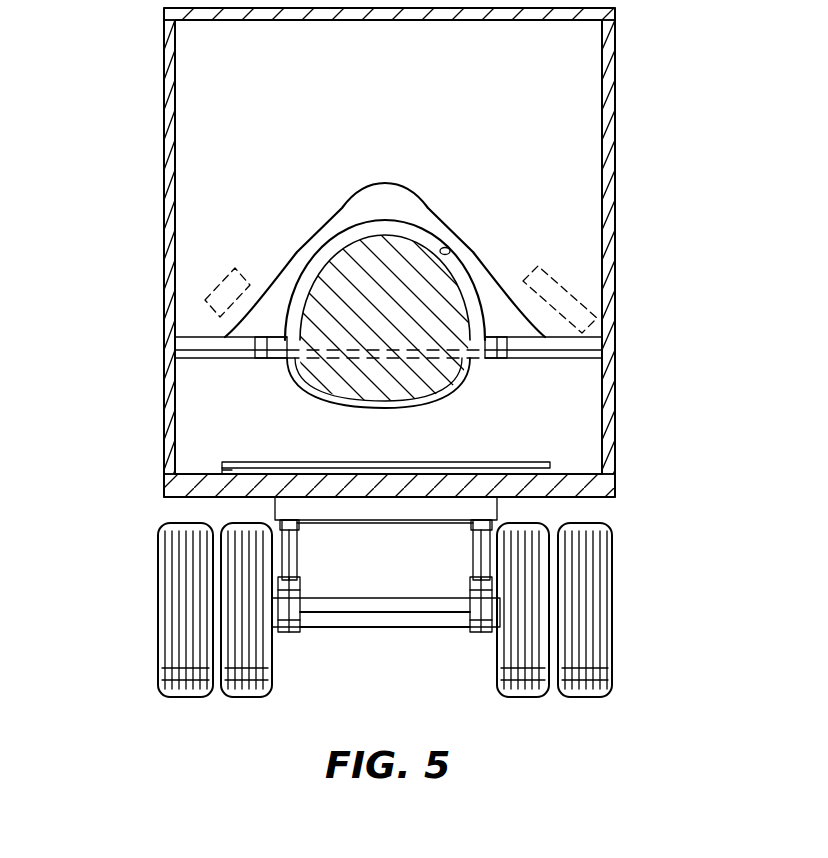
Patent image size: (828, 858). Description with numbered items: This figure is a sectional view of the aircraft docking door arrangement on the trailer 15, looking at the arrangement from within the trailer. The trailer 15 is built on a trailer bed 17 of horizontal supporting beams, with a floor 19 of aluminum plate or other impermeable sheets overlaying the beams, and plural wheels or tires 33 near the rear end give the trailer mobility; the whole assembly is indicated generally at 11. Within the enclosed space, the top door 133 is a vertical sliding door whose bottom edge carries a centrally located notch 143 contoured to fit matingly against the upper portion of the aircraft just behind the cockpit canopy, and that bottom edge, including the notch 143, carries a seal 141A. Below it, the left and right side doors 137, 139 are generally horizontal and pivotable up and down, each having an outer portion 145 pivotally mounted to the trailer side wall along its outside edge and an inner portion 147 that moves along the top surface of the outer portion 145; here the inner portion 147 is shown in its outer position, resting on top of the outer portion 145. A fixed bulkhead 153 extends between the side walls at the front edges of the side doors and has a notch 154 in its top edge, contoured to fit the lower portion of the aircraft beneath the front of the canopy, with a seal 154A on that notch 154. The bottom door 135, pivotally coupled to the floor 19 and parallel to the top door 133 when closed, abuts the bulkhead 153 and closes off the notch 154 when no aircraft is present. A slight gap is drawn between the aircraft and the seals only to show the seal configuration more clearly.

The trailer vehicle 11 is at (137, 80).
The trailer 15 is at (163, 165).
The trailer bed 17 is at (615, 490).
The floor 19 is at (595, 473).
The wheels or tires 33 is at (162, 623).
The top door 133 is at (583, 146).
The bottom door 135 is at (214, 472).
The side door 137 is at (550, 355).
The side door 139 is at (223, 333).
The seal 141A is at (293, 248).
The notch 143 is at (448, 252).
The outer portion 145 is at (197, 357).
The inner portion 147 is at (192, 338).
The bulkhead 153 is at (222, 418).
The notch 154 is at (420, 407).
The seal 154A is at (470, 381).